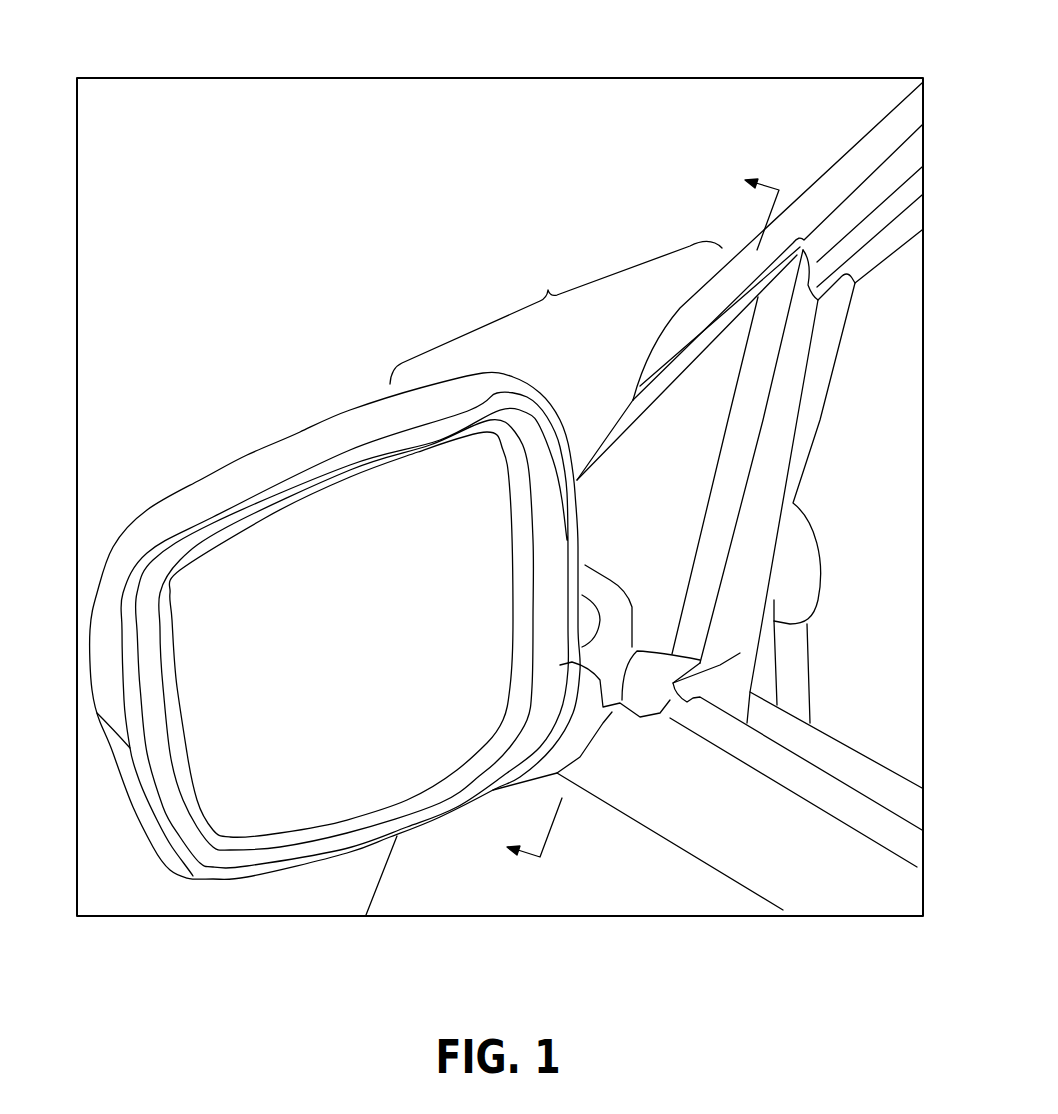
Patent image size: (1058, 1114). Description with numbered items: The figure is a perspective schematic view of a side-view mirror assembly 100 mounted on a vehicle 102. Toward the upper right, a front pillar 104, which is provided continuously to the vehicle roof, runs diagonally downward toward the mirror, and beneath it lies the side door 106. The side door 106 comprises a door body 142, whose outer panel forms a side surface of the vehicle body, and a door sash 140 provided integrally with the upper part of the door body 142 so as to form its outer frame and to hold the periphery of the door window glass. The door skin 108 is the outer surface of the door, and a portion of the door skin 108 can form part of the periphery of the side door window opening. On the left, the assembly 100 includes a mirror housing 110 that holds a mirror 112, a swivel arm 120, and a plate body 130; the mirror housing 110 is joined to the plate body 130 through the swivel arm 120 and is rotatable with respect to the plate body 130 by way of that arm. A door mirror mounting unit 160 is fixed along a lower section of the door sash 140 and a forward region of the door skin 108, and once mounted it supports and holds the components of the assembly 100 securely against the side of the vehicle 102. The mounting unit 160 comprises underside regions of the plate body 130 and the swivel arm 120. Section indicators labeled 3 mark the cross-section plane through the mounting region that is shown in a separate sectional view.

The side-view mirror assembly 100 is at (273, 302).
The vehicle 102 is at (811, 144).
The front pillar 104 is at (860, 104).
The side door 106 is at (657, 895).
The door skin 108 is at (630, 737).
The mirror housing 110 is at (253, 448).
The mirror 112 is at (321, 652).
The swivel arm 120 is at (581, 809).
The plate body 130 is at (615, 462).
The door sash 140 is at (830, 434).
The door body 142 is at (397, 883).
The door mirror mounting unit 160 is at (556, 312).
The section line for FIG. 3 is at (629, 509).